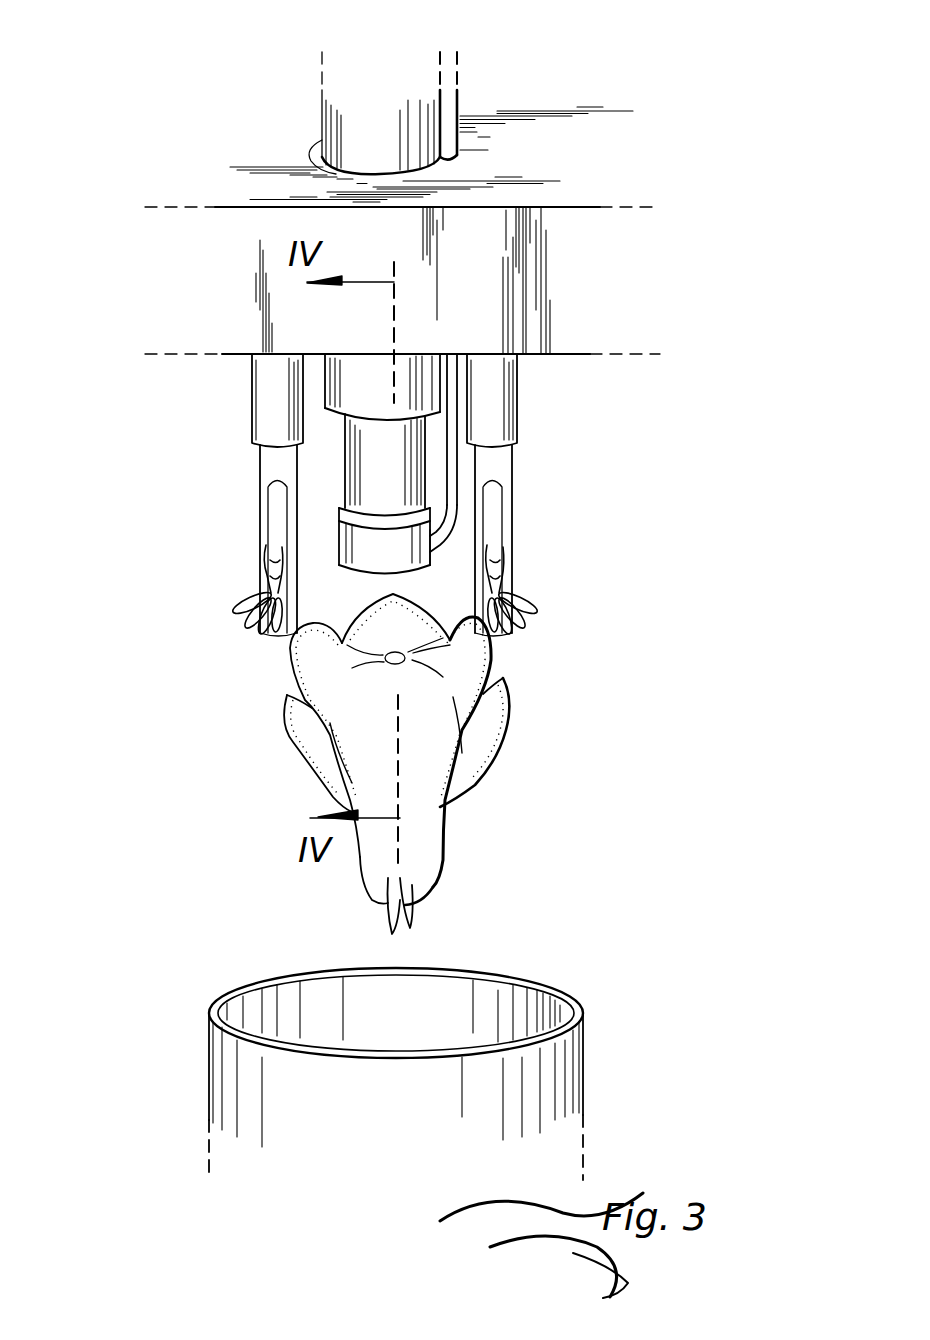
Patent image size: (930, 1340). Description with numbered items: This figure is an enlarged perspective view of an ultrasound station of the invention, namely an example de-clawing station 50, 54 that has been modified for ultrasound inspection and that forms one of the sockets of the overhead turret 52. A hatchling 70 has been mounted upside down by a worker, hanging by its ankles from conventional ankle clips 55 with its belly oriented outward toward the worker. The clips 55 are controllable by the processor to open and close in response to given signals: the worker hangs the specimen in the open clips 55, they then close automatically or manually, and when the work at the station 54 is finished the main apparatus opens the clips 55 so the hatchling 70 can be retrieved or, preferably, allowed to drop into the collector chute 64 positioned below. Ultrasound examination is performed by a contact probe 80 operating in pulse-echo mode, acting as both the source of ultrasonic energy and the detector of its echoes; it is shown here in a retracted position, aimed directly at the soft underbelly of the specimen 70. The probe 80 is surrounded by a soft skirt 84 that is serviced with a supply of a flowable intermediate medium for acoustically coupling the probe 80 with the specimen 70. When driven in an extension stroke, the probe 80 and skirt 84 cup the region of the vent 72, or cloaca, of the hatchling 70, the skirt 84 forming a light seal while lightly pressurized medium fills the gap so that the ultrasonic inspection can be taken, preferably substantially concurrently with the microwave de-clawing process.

The processing apparatus 50 is at (238, 118).
The de-clawing station 54 is at (402, 280).
The overhead turret 52 is at (215, 207).
The ankle clips 55 is at (263, 480).
The contact probe 80 is at (350, 573).
The soft skirt 84 is at (403, 573).
The hatchling 70 is at (430, 850).
The vent 72 is at (448, 638).
The collector chute 64 is at (503, 990).